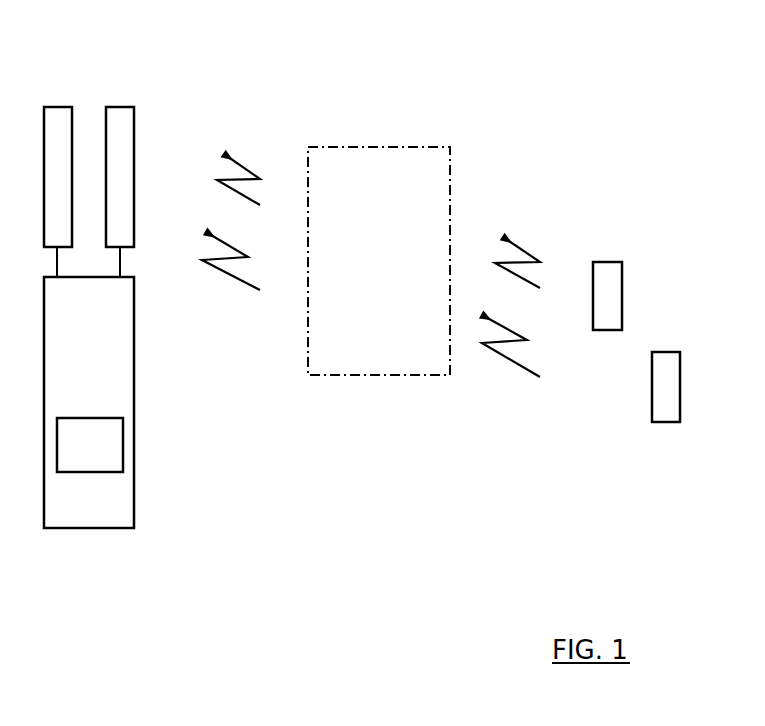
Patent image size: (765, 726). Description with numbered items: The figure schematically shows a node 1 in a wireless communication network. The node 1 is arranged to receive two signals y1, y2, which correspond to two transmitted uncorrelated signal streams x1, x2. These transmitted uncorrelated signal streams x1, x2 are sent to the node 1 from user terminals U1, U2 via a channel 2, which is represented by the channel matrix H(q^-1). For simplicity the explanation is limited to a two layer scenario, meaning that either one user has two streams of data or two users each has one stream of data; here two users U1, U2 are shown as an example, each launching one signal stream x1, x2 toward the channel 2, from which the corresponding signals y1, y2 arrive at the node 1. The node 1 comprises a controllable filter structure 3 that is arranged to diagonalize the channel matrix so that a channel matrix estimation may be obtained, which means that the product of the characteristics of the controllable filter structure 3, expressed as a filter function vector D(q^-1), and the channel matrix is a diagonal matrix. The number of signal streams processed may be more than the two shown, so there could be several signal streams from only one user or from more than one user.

The node 1 is at (147, 293).
The channel 2 is at (355, 262).
The controllable filter structure 3 is at (73, 459).
The received signal y1 is at (233, 157).
The received signal y2 is at (258, 289).
The transmitted uncorrelated signal stream x1 is at (512, 237).
The transmitted uncorrelated signal stream x2 is at (522, 368).
The user terminal U1 is at (602, 262).
The user terminal U2 is at (662, 352).